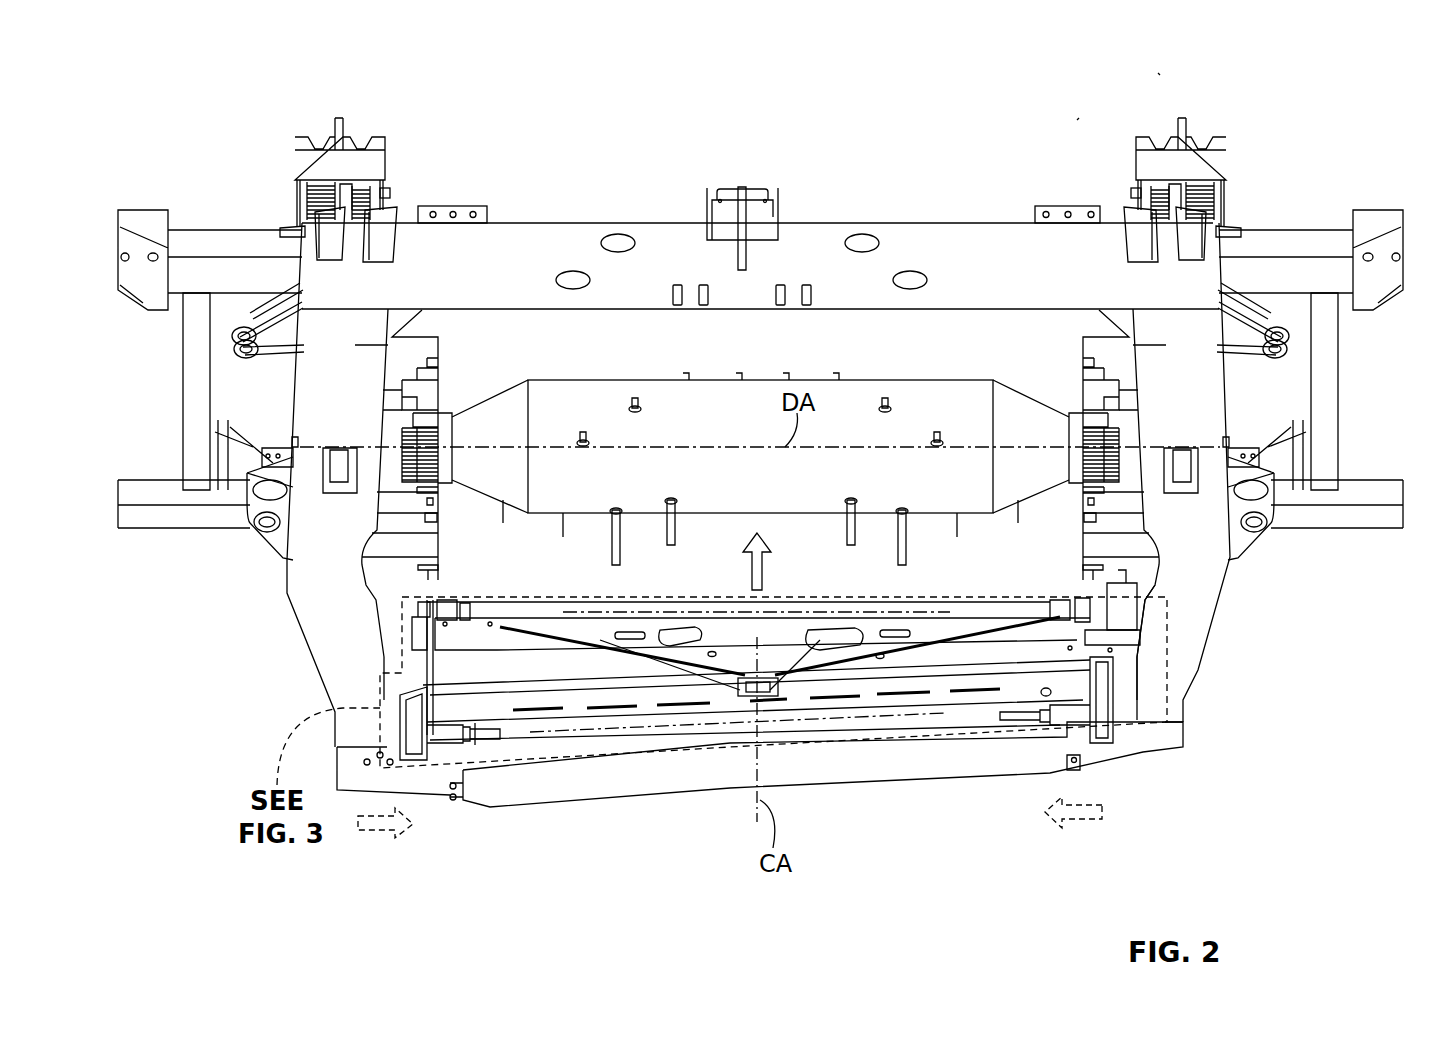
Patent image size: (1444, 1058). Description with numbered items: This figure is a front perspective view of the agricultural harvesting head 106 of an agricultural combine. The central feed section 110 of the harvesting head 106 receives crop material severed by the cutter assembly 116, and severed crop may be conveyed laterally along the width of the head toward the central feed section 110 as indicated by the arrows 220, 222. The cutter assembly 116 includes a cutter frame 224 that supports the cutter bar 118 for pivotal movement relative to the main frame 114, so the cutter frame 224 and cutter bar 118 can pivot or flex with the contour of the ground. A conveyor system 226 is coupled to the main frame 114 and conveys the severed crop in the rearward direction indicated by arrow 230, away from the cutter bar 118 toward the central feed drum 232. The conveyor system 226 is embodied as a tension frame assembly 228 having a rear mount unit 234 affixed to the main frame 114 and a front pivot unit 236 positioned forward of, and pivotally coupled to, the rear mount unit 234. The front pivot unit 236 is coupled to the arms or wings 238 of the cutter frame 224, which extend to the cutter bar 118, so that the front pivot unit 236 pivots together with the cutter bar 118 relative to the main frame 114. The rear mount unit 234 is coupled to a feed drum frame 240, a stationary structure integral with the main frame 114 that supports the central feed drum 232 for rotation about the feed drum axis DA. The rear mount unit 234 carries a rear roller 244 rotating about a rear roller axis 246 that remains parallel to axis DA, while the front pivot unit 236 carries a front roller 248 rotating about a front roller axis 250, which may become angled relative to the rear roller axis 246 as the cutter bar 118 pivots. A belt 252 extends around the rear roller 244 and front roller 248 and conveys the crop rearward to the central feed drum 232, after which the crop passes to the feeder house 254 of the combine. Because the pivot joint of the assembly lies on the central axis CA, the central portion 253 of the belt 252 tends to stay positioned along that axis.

The agricultural harvesting head 106 is at (1158, 73).
The central feed section 110 is at (1077, 120).
The main frame 114 is at (513, 233).
The cutter assembly 116 is at (1205, 232).
The cutter bar 118 is at (665, 785).
The arrow 220 is at (378, 832).
The arrow 222 is at (1090, 820).
The cutter frame 224 is at (420, 258).
The conveyor system 226 is at (1060, 490).
The tension frame assembly 228 is at (905, 587).
The arrow 230 is at (740, 563).
The central feed drum 232 is at (983, 430).
The rear mount unit 234 is at (538, 578).
The front pivot unit 236 is at (577, 707).
The arms or wings 238 is at (1210, 593).
The feed drum frame 240 is at (1003, 548).
The rear roller 244 is at (838, 598).
The rear roller axis 246 is at (720, 632).
The front roller 248 is at (920, 710).
The front roller axis 250 is at (752, 722).
The belt 252 is at (787, 570).
The central portion 253 is at (727, 672).
The feeder house 254 is at (911, 365).